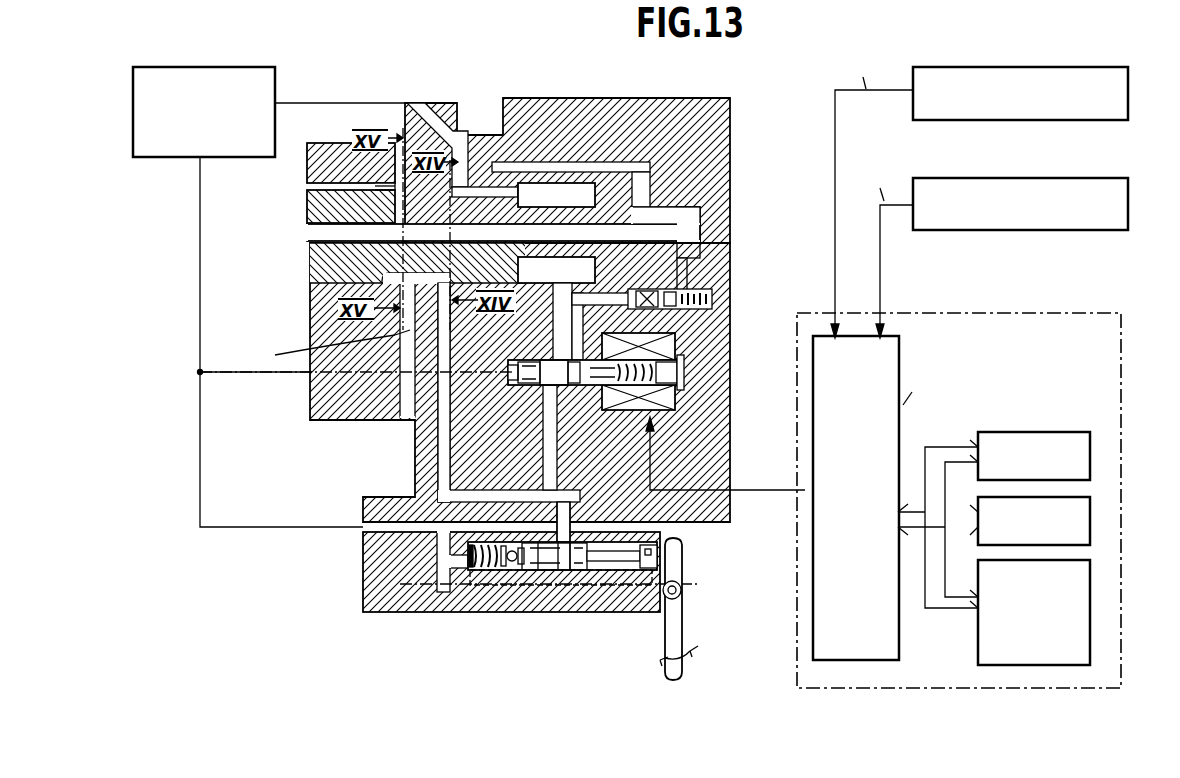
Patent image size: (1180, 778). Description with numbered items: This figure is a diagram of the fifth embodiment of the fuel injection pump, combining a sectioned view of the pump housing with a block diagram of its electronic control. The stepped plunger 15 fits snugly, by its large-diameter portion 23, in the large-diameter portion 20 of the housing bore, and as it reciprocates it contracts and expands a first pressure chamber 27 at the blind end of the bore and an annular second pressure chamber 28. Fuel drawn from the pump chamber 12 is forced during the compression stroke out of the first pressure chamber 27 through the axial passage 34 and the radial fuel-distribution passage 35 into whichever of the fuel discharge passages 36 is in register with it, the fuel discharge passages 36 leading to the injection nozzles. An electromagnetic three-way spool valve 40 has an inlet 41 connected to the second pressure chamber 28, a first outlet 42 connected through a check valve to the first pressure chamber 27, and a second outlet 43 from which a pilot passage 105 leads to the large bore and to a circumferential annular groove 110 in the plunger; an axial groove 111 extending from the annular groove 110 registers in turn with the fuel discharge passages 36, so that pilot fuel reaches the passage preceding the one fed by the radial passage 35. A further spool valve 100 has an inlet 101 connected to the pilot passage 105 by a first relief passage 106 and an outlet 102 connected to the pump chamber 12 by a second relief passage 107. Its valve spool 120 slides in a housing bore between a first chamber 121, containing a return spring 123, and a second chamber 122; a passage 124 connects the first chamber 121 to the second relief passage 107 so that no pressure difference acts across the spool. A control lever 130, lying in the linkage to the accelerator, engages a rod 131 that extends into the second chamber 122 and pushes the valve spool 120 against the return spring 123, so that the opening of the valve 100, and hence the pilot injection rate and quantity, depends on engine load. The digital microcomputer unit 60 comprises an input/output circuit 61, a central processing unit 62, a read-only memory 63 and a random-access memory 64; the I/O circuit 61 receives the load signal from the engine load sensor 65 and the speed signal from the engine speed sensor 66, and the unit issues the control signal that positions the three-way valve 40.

The pump chamber 12 is at (277, 85).
The plunger 15 is at (292, 205).
The large-diameter portion of the bore 20 is at (330, 282).
The large-diameter portion of the plunger 23 is at (335, 212).
The first pressure chamber 27 is at (700, 218).
The second pressure chamber 28 is at (558, 195).
The axial passage 34 is at (608, 235).
The radial fuel-distribution passage 35 is at (380, 204).
The fuel discharge passages 36 is at (382, 160).
The electromagnetic three-way spool valve 40 is at (688, 384).
The inlet 41 is at (605, 345).
The first outlet 42 is at (605, 362).
The second outlet 43 is at (548, 390).
The digital microcomputer unit 60 is at (792, 688).
The input/output circuit 61 is at (794, 498).
The central processing unit 62 is at (1092, 612).
The read-only memory 63 is at (1092, 522).
The random-access memory 64 is at (1092, 458).
The engine load sensor 65 is at (1128, 100).
The engine speed sensor 66 is at (1128, 212).
The spool valve 100 is at (485, 575).
The inlet 101 is at (548, 572).
The outlet 102 is at (582, 572).
The pilot passage 105 is at (437, 467).
The first relief passage 106 is at (568, 498).
The second relief passage 107 is at (402, 535).
The annular groove 110 is at (460, 175).
The axial groove 111 is at (330, 346).
The valve spool 120 is at (578, 575).
The first chamber 121 is at (492, 575).
The second chamber 122 is at (632, 570).
The return spring 123 is at (470, 572).
The passage 124 is at (612, 588).
The control lever 130 is at (683, 615).
The rod 131 is at (684, 565).